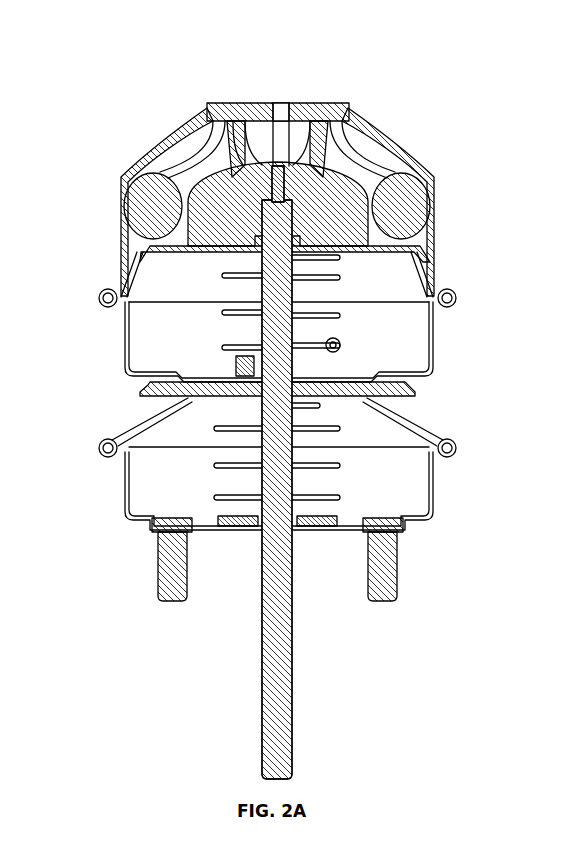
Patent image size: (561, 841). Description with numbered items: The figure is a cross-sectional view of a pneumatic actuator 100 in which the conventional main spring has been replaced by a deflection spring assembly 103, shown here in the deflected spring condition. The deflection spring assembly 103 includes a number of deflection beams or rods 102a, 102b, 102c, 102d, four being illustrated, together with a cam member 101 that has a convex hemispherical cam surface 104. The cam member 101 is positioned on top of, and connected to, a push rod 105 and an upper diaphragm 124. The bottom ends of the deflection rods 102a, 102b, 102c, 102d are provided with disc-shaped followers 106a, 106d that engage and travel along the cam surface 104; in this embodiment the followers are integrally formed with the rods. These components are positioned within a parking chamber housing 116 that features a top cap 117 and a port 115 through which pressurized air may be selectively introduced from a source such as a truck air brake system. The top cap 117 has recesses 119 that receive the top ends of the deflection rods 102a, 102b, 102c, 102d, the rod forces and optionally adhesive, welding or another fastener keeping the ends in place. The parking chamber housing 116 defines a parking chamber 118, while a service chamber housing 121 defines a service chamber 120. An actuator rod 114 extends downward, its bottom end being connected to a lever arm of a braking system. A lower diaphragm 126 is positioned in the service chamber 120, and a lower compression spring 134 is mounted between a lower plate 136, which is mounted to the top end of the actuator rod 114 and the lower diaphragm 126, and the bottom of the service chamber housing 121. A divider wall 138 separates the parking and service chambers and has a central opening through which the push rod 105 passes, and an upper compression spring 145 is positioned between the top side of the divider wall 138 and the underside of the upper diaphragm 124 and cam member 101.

The pneumatic actuator 100 is at (143, 72).
The cam member 101 is at (182, 256).
The deflection rod 102a is at (207, 147).
The deflection rod 102b is at (257, 108).
The deflection rod 102c is at (298, 110).
The deflection rod 102d is at (385, 118).
The deflection spring assembly 103 is at (92, 203).
The cam surface 104 is at (345, 130).
The push rod 105 is at (300, 332).
The follower 106a is at (146, 190).
The follower 106d is at (412, 213).
The actuator rod 114 is at (268, 698).
The port 115 is at (342, 348).
The parking chamber housing 116 is at (405, 152).
The top cap 117 is at (318, 112).
The parking chamber 118 is at (436, 346).
The recesses 119 is at (236, 110).
The service chamber 120 is at (420, 500).
The service chamber housing 121 is at (130, 500).
The upper diaphragm 124 is at (122, 275).
The lower diaphragm 126 is at (440, 428).
The lower compression spring 134 is at (205, 466).
The lower plate 136 is at (140, 393).
The divider wall 138 is at (200, 374).
The upper compression spring 145 is at (342, 277).